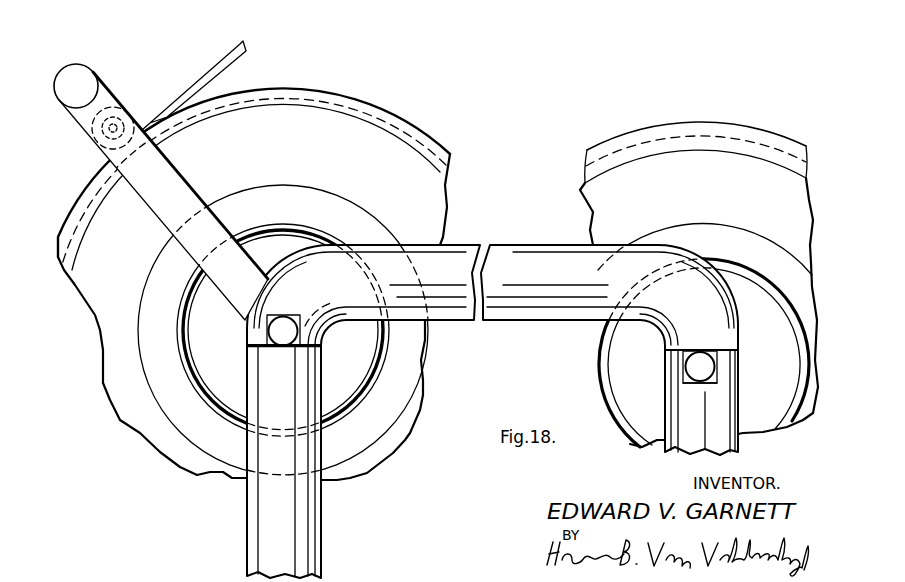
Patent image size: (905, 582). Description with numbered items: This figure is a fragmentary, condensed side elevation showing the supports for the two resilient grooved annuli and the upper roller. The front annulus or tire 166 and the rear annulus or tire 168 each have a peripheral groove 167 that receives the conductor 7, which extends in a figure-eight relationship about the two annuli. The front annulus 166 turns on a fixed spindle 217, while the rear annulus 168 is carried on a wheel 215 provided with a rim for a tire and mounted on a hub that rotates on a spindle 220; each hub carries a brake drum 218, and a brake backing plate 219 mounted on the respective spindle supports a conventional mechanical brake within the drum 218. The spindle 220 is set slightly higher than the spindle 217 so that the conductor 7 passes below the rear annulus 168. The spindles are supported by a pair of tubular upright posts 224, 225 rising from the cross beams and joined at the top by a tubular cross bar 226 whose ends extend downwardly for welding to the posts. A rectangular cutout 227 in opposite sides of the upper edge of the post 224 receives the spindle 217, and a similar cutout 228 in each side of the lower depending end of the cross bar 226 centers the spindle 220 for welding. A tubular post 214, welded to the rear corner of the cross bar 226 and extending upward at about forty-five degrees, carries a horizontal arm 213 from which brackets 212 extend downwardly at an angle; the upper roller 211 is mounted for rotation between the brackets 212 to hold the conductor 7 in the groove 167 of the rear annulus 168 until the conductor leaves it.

The conductor 7 is at (226, 69).
The front annulus or tire 166 is at (656, 128).
The groove 167 is at (393, 122).
The rear annulus or tire 168 is at (453, 148).
The upper roller 211 is at (128, 117).
The brackets 212 is at (118, 100).
The horizontal arm 213 is at (89, 67).
The post 214 is at (183, 191).
The wheel 215 is at (320, 188).
The spindle 217 is at (705, 368).
The brake drum 218 is at (279, 226).
The brake backing plate 219 is at (232, 369).
The spindle 220 is at (282, 318).
The upright post 224 is at (667, 452).
The upright post 225 is at (313, 547).
The cross bar 226 is at (536, 244).
The rectangular cutout 227 is at (683, 392).
The cutout 228 is at (258, 348).